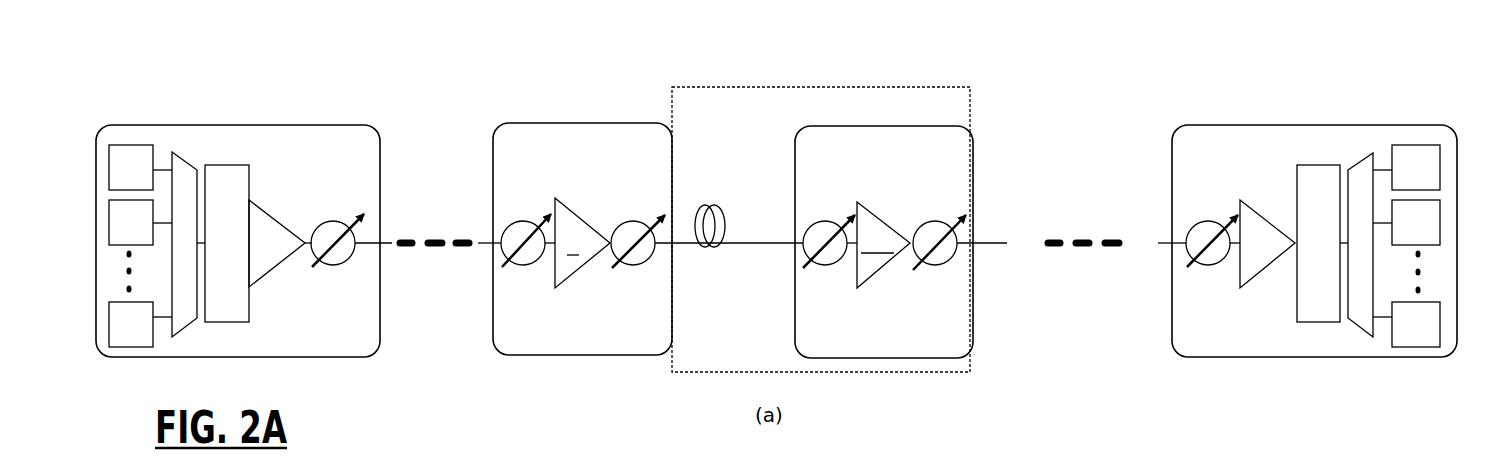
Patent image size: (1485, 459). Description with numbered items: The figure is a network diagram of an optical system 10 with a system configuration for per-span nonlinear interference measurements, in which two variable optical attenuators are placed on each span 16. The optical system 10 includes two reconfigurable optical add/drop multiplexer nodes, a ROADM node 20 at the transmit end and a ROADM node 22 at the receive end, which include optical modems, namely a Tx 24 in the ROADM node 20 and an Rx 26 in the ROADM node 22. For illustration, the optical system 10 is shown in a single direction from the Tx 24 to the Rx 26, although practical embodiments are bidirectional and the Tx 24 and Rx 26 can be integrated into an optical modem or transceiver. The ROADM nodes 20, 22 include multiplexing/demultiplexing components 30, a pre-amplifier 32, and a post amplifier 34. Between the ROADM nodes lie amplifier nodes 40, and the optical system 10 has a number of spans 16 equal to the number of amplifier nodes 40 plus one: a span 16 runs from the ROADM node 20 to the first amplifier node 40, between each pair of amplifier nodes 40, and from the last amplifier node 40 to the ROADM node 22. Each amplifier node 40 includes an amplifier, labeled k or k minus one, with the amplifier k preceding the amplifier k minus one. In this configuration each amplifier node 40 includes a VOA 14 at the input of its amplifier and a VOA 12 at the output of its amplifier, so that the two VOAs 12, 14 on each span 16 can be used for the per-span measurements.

The optical system 10 is at (870, 48).
The VOA 12 is at (620, 265).
The VOA 14 is at (802, 250).
The span 16 is at (688, 85).
The ROADM node 20 is at (257, 123).
The ROADM node 22 is at (1318, 123).
The Tx 24 is at (143, 134).
The Rx 26 is at (1405, 137).
The multiplexing/demultiplexing components 30 is at (258, 171).
The pre-amplifier 32 is at (284, 255).
The post amplifier 34 is at (1269, 253).
The amplifier node 40 is at (568, 122).